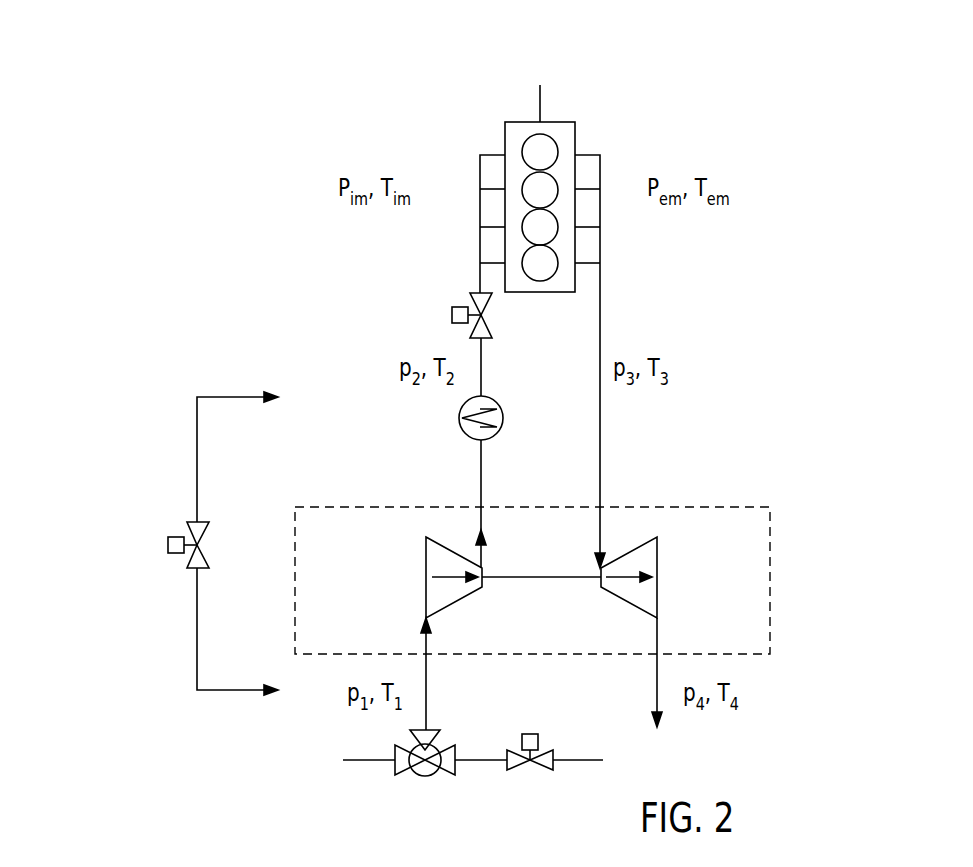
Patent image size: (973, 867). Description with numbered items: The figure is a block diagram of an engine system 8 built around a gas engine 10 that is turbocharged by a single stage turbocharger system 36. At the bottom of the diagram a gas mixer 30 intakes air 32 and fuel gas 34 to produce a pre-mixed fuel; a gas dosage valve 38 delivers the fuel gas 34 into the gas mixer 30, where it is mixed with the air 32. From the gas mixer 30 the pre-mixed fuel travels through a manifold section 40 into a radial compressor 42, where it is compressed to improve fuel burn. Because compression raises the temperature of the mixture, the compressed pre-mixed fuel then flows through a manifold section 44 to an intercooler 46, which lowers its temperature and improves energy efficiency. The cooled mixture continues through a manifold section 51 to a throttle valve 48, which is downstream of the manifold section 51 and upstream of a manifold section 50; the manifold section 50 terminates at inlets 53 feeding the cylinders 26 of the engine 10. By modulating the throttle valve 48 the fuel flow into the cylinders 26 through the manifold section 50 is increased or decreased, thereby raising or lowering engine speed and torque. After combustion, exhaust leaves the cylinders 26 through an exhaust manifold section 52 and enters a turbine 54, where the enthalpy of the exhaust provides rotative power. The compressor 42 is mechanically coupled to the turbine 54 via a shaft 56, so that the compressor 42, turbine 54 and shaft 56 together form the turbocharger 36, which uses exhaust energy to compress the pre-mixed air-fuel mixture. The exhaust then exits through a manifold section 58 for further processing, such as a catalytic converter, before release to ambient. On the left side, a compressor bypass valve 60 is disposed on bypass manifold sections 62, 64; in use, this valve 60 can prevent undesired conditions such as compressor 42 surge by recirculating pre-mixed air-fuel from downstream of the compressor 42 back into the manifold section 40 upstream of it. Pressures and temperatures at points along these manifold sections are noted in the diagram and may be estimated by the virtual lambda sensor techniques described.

The engine system 8 is at (895, 260).
The gas engine 10 is at (557, 122).
The cylinders 26 is at (554, 182).
The gas mixer 30 is at (400, 772).
The air 32 is at (367, 760).
The fuel gas 34 is at (585, 760).
The turbocharger system 36 is at (730, 507).
The gas dosage valve 38 is at (512, 770).
The manifold section 40 is at (427, 688).
The radial compressor 42 is at (432, 537).
The manifold section 44 is at (482, 462).
The intercooler 46 is at (496, 405).
The throttle valve 48 is at (489, 322).
The manifold section 50 is at (480, 215).
The manifold section 51 is at (482, 370).
The exhaust manifold section 52 is at (601, 310).
The inlets 53 is at (505, 189).
The turbine 54 is at (657, 548).
The shaft 56 is at (562, 577).
The manifold section 58 is at (656, 690).
The compressor bypass valve 60 is at (207, 541).
The bypass manifold section 62 is at (197, 425).
The bypass manifold section 64 is at (197, 643).